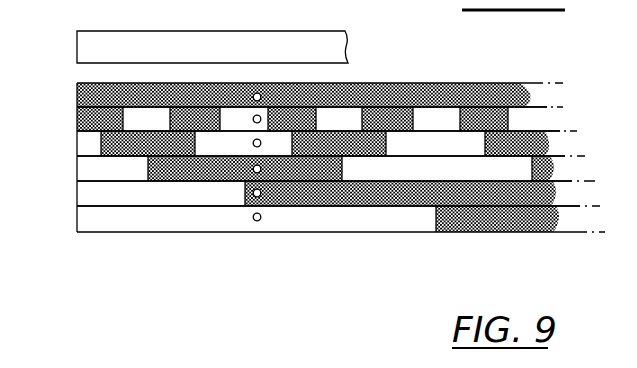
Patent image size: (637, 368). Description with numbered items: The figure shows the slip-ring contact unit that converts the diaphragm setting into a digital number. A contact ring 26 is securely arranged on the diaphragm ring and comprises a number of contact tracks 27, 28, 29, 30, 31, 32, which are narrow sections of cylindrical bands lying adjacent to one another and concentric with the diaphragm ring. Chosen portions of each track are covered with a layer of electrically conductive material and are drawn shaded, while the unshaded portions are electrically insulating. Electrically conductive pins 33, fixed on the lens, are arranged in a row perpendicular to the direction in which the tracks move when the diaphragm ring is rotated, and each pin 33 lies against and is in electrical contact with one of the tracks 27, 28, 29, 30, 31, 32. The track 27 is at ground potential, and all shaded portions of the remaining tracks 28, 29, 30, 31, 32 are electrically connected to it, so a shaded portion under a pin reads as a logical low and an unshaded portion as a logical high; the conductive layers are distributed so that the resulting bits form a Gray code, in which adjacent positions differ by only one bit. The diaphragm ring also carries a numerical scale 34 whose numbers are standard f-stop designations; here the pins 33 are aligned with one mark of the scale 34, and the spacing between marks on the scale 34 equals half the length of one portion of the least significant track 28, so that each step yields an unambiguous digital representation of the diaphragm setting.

The contact ring 26 is at (490, 82).
The contact track 27 is at (77, 96).
The contact track 28 is at (77, 119).
The contact track 29 is at (77, 147).
The contact track 30 is at (77, 172).
The contact track 31 is at (77, 196).
The contact track 32 is at (77, 222).
The electrically conductive pins 33 is at (257, 221).
The numerical scale 34 is at (222, 30).